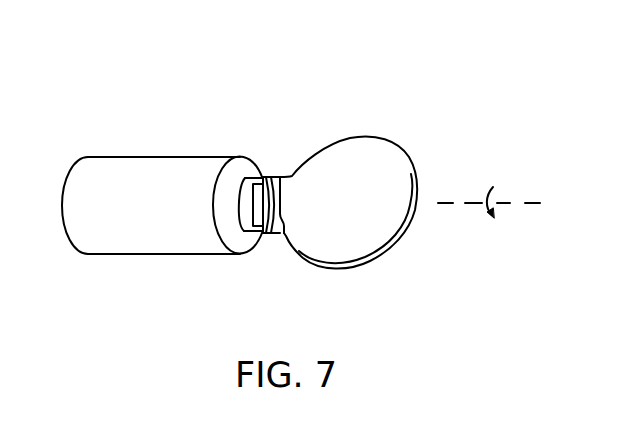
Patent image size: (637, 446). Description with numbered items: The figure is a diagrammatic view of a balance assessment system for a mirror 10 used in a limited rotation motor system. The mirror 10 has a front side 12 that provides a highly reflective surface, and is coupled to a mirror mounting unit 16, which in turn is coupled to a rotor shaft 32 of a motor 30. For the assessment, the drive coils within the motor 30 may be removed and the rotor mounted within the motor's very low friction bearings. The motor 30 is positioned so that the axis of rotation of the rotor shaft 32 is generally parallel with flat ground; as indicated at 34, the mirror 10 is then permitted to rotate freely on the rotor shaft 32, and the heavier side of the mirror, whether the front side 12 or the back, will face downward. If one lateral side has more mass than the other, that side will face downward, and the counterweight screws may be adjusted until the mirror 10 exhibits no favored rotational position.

The mirror 10 is at (430, 107).
The front side 12 is at (352, 152).
The mirror mounting unit 16 is at (259, 236).
The motor 30 is at (185, 156).
The rotor shaft 32 is at (251, 181).
The rotation indication 34 is at (462, 270).